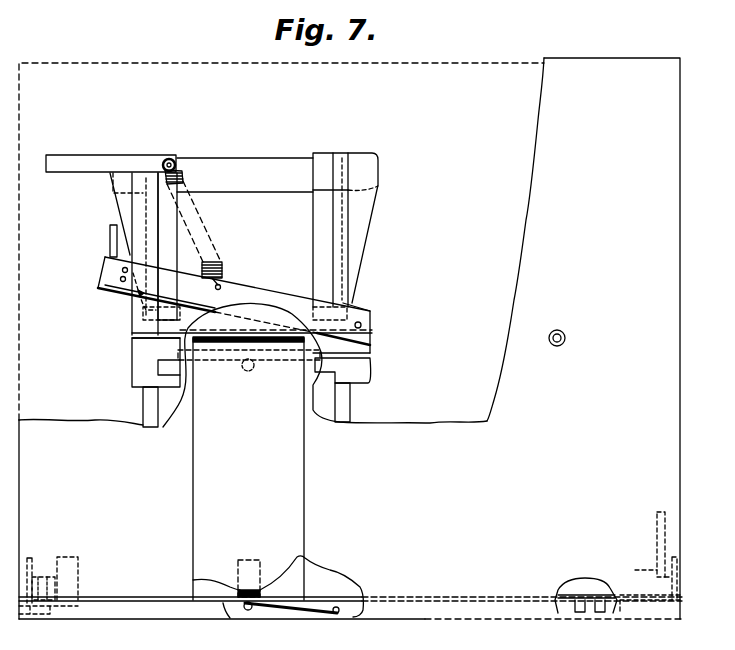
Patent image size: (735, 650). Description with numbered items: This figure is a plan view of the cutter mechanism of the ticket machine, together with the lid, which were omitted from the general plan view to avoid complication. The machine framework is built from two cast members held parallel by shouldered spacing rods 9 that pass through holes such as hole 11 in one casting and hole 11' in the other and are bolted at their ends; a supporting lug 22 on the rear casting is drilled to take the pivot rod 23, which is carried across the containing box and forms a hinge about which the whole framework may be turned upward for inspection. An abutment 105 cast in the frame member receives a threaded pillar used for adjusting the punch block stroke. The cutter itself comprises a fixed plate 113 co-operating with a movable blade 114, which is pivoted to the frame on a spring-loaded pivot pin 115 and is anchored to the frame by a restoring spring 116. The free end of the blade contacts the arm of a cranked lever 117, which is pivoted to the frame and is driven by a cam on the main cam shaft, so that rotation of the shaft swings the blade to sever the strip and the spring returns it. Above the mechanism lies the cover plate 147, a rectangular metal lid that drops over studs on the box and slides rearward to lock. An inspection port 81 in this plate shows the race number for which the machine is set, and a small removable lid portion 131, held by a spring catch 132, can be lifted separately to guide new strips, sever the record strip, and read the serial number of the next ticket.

The supporting lug 22 is at (65, 160).
The shouldered spacing rod 9 is at (208, 168).
The hole 11 is at (190, 210).
The hole 11' is at (313, 203).
The abutment 105 is at (362, 170).
The cranked lever 117 is at (110, 232).
The restoring spring 116 is at (222, 267).
The movable blade 114 is at (281, 303).
The spring-loaded pivot pin 115 is at (362, 323).
The fixed plate 113 is at (362, 352).
The removable lid portion 131 is at (293, 453).
The spring catch 132 is at (267, 607).
The inspection port 81 is at (562, 345).
The cover plate 147 is at (672, 366).
The pivot rod 23 is at (72, 577).